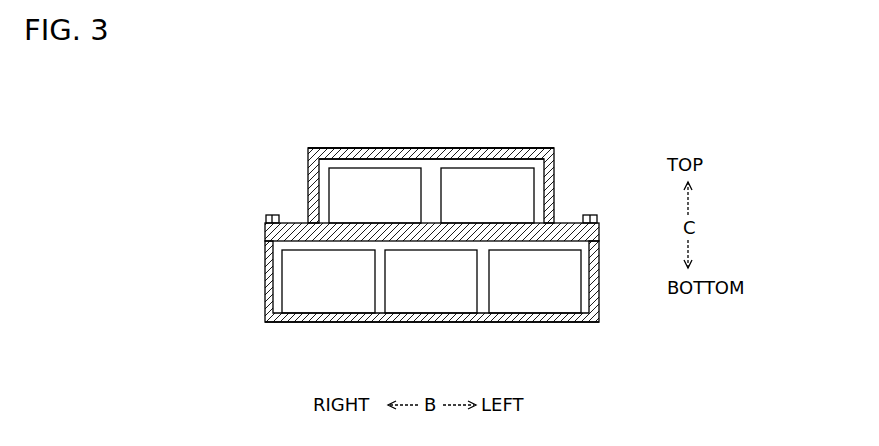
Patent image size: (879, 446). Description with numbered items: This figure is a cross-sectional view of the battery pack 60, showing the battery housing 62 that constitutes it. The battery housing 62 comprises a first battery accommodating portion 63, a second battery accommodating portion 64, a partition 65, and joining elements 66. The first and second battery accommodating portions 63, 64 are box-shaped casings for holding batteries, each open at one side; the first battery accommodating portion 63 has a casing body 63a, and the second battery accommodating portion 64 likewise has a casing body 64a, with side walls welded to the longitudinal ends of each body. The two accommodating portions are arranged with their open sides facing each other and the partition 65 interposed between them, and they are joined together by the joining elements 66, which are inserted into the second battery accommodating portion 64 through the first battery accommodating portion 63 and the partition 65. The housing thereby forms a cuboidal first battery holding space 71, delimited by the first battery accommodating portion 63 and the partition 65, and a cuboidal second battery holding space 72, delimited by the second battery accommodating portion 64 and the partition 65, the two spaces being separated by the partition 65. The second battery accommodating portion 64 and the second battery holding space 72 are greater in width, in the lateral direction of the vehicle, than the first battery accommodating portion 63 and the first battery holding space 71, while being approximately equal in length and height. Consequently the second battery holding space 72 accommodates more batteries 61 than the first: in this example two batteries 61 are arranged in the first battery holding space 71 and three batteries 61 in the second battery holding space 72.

The battery pack 60 is at (607, 345).
The batteries 61 is at (480, 185).
The battery housing 62 is at (556, 141).
The first battery accommodating portion 63 is at (497, 150).
The casing body 63a is at (431, 110).
The second battery accommodating portion 64 is at (600, 295).
The casing body 64a is at (465, 322).
The partition 65 is at (600, 233).
The joining elements 66 is at (272, 214).
The first battery holding space 71 is at (308, 158).
The second battery holding space 72 is at (292, 245).